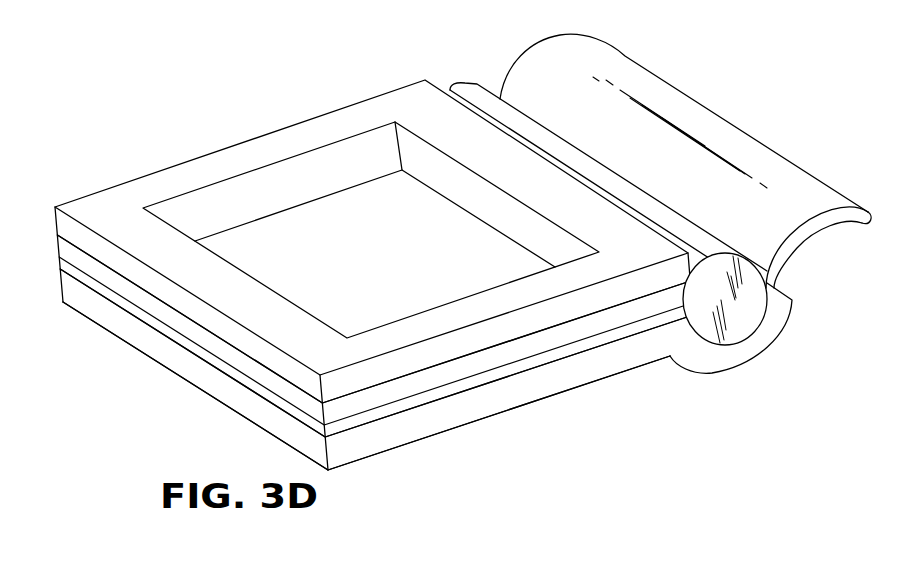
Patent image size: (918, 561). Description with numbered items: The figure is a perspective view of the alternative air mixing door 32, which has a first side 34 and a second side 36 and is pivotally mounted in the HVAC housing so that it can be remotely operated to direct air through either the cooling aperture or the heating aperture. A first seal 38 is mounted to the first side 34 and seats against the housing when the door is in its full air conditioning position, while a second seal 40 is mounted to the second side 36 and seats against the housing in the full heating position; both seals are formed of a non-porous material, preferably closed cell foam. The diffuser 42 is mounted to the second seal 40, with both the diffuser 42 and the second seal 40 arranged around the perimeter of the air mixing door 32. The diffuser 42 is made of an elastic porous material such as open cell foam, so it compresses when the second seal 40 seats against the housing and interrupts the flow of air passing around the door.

The air mixing door 32 is at (744, 117).
The first side 34 is at (475, 418).
The second side 36 is at (252, 167).
The first seal 38 is at (418, 423).
The second seal 40 is at (563, 332).
The diffuser 42 is at (502, 328).